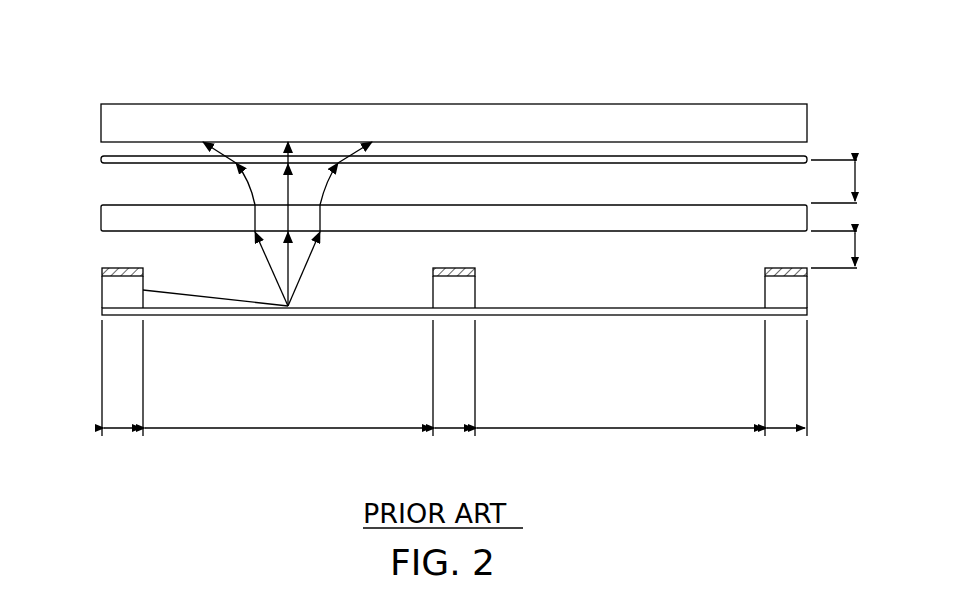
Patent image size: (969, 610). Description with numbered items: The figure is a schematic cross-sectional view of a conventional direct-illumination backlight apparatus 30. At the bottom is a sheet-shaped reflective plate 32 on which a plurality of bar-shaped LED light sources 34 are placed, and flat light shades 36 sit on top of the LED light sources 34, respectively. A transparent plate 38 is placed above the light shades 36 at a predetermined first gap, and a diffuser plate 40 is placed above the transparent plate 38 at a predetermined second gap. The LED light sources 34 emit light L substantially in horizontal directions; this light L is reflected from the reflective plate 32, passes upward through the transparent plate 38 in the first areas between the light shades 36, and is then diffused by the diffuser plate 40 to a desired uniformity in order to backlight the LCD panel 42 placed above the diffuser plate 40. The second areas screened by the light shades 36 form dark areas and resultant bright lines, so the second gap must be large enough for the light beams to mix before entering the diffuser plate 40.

The direct-illumination backlight apparatus 30 is at (562, 38).
The reflective plate 32 is at (357, 315).
The bar-shaped LED light sources 34 is at (107, 295).
The flat light shades 36 is at (101, 271).
The transparent plate 38 is at (101, 221).
The diffuser plate 40 is at (101, 158).
The LCD panel 42 is at (118, 113).
The light L is at (205, 303).